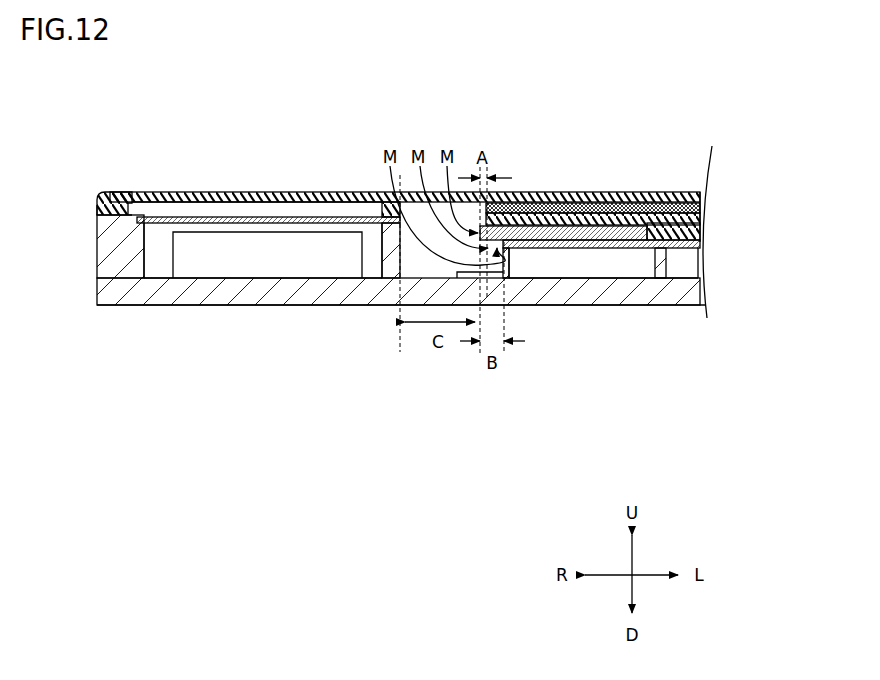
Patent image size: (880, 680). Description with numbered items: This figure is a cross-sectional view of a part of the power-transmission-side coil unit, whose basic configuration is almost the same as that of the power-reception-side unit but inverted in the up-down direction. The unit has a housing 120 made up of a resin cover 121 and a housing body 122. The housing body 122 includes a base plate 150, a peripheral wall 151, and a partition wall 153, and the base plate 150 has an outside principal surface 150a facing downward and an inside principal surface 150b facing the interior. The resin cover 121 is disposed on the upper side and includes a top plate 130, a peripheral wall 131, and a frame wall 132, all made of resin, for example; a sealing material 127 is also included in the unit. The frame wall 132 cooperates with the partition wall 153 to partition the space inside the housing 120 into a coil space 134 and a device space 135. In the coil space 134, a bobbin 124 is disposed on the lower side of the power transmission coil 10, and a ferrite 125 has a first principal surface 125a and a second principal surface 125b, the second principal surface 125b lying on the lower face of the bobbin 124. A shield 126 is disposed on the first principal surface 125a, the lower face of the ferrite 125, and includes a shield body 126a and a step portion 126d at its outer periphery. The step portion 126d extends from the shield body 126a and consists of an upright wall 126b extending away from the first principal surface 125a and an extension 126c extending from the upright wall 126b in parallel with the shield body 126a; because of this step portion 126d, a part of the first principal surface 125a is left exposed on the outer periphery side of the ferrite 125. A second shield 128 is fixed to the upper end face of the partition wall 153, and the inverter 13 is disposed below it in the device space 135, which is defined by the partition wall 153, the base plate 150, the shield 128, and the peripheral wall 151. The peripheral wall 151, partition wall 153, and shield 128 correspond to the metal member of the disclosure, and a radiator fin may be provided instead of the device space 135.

The power transmission coil 10 is at (675, 192).
The inverter 13 is at (328, 265).
The housing 120 is at (373, 251).
The resin cover 121 is at (370, 164).
The housing body 122 is at (392, 307).
The bobbin 124 is at (700, 228).
The ferrite 125 is at (634, 236).
The first principal surface 125a is at (577, 226).
The second principal surface 125b is at (526, 213).
The shield 126 is at (577, 359).
The shield body 126a is at (633, 248).
The upright wall 126b is at (511, 253).
The extension 126c is at (493, 278).
The step portion 126d is at (538, 337).
The sealing material 127 is at (99, 211).
The shield 128 is at (268, 217).
The top plate 130 is at (152, 192).
The peripheral wall 131 is at (116, 192).
The frame wall 132 is at (386, 205).
The coil space 134 is at (626, 179).
The device space 135 is at (228, 214).
The base plate 150 is at (392, 307).
The outside principal surface 150a is at (210, 305).
The inside principal surface 150b is at (176, 272).
The peripheral wall 151 is at (110, 262).
The partition wall 153 is at (390, 258).